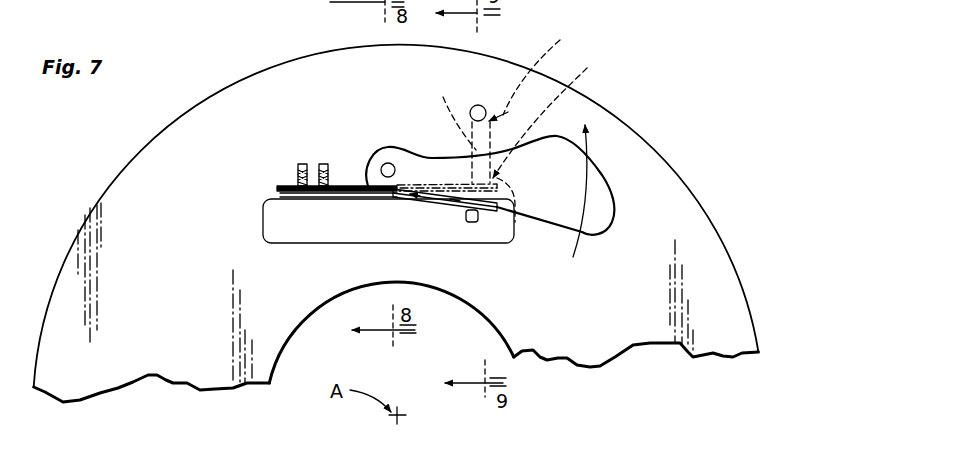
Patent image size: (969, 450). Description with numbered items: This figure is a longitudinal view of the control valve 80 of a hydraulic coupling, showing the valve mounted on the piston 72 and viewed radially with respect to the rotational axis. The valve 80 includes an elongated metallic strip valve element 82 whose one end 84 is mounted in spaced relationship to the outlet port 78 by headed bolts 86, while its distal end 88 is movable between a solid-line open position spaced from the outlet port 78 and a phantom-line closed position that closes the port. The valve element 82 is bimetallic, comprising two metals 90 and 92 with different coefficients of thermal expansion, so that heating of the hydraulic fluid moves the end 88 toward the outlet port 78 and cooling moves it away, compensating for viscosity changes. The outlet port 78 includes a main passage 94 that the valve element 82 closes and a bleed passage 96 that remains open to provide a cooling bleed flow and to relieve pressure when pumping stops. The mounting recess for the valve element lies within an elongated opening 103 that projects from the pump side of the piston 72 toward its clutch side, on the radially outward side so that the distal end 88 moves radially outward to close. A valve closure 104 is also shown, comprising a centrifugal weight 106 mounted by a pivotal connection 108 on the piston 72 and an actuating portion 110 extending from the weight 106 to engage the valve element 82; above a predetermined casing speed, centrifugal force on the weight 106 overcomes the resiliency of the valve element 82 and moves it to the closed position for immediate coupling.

The piston 72 is at (128, 182).
The outlet port 78 is at (487, 104).
The control valve 80 is at (453, 220).
The valve element 82 is at (406, 203).
The one end of the valve element 84 is at (282, 186).
The headed bolts 86 is at (322, 164).
The distal end of the valve element 88 is at (488, 212).
The first metal 90 is at (388, 198).
The second metal 92 is at (363, 191).
The main passage 94 is at (447, 114).
The bleed passage 96 is at (559, 139).
The elongated opening 103 is at (264, 207).
The valve closure 104 is at (542, 242).
The centrifugal weight 106 is at (607, 192).
The pivotal connection 108 is at (390, 163).
The actuating portion 110 is at (473, 224).